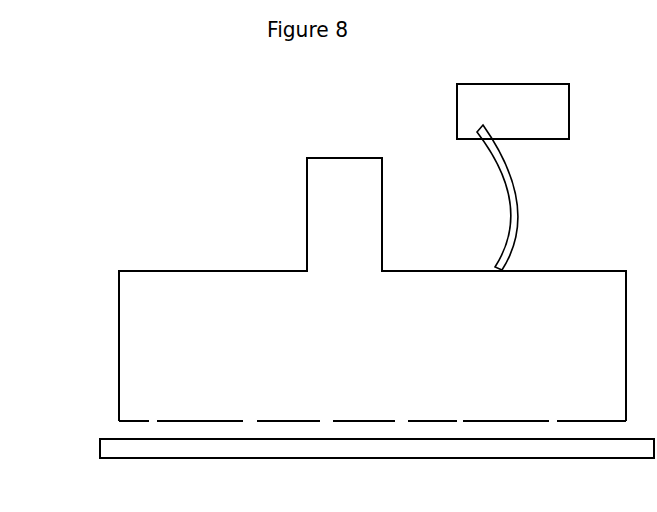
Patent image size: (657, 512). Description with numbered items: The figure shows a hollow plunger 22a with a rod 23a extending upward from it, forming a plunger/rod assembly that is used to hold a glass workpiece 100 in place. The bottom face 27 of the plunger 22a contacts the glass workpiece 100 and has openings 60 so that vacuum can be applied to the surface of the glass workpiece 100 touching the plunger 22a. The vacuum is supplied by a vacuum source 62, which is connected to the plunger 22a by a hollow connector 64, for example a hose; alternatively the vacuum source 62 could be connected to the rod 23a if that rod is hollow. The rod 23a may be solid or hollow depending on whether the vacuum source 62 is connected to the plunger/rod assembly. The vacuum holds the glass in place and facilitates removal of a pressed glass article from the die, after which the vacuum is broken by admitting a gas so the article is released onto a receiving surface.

The plunger 22a is at (372, 341).
The rod 23a is at (344, 210).
The bottom face 27 is at (138, 420).
The openings 60 is at (169, 416).
The vacuum source 62 is at (513, 111).
The hollow connector 64 is at (527, 177).
The glass workpiece 100 is at (87, 439).